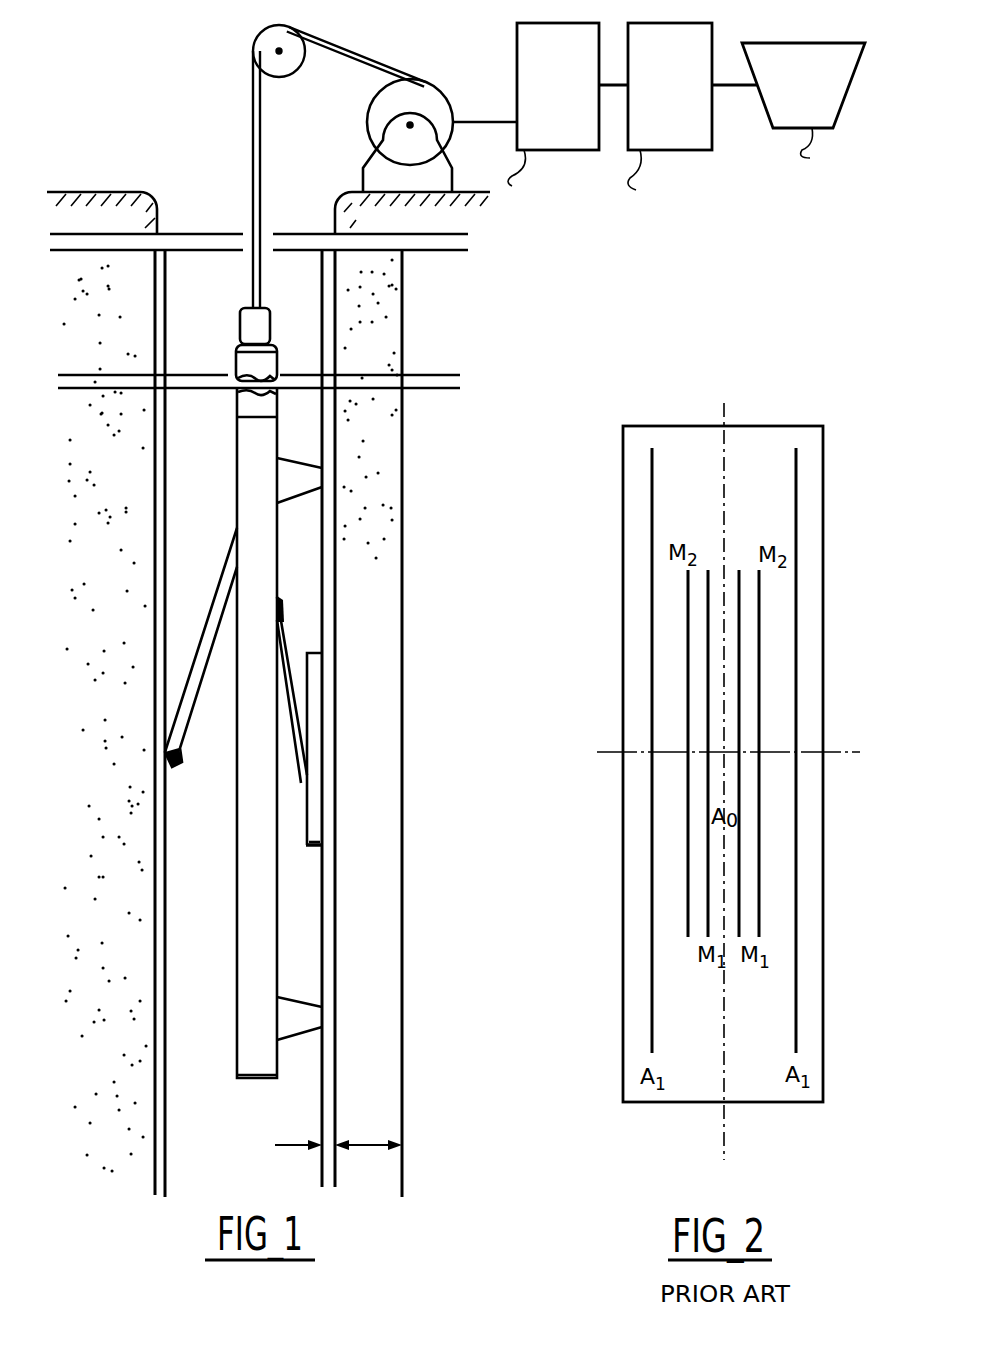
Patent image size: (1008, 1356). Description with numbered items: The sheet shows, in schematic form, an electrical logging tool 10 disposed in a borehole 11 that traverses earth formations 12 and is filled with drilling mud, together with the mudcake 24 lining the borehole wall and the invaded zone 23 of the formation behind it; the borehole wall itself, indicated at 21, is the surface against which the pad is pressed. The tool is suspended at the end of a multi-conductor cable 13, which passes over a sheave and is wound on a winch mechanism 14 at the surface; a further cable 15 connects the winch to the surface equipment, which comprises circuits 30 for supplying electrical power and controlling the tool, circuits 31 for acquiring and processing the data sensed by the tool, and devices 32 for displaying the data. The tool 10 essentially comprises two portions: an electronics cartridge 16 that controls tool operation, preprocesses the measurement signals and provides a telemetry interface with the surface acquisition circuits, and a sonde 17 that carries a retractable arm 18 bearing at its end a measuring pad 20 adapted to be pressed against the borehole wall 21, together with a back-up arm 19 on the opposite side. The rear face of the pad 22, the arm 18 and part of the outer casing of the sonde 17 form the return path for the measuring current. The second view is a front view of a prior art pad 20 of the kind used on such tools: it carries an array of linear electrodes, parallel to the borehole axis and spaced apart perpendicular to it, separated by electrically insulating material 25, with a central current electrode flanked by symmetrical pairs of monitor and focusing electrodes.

In FIG. 1, the electrical logging tool 10 is at (272, 693).
In FIG. 1, the borehole 11 is at (184, 918).
In FIG. 1, the earth formations 12 is at (109, 535).
In FIG. 1, the multi-conductor cable 13 is at (253, 152).
In FIG. 1, the winch mechanism 14 is at (425, 165).
In FIG. 1, the cable 15 is at (488, 120).
In FIG. 1, the electronics cartridge 16 is at (248, 405).
In FIG. 1, the sonde 17 is at (252, 846).
In FIG. 1, the retractable arm 18 is at (281, 619).
In FIG. 1, the back-up arm 19 is at (183, 722).
In FIG. 1, the measuring pad 20 is at (317, 690).
In FIG. 2, the measuring pad 20 is at (628, 426).
In FIG. 1, the casing 21 is at (325, 801).
In FIG. 2, the casing 21 is at (770, 447).
In FIG. 1, the rear face of pad 22 is at (303, 834).
In FIG. 1, the invaded zone 23 is at (368, 1131).
In FIG. 1, the mudcake 24 is at (298, 1131).
In FIG. 2, the electrically insulating material 25 is at (719, 692).
In FIG. 1, the circuits for supplying electrical power and controlling the tool 30 is at (575, 98).
In FIG. 1, the circuits for acquiring and processing data 31 is at (681, 98).
In FIG. 1, the devices for displaying data 32 is at (820, 98).